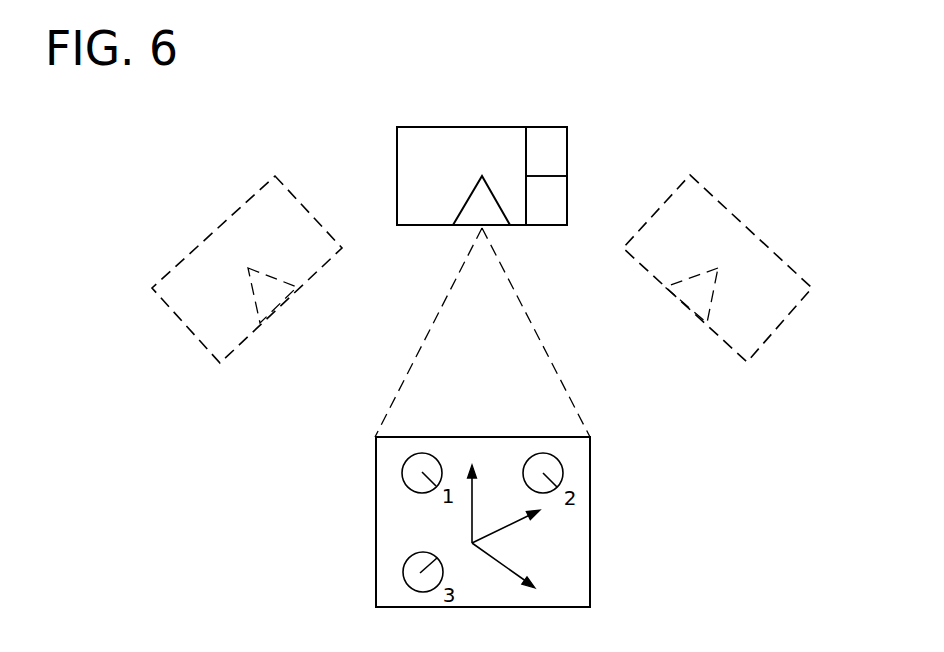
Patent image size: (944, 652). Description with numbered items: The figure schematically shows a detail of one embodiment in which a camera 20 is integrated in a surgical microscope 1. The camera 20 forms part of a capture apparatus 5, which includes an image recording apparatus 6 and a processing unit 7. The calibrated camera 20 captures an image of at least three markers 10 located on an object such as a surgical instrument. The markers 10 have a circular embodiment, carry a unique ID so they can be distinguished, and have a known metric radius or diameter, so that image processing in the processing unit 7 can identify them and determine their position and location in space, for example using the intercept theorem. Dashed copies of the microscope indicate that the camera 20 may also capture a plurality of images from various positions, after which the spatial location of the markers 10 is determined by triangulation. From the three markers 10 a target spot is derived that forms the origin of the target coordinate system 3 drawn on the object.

The surgical microscope 1 is at (378, 131).
The capture apparatus 5 is at (556, 113).
The processing unit 7 is at (548, 154).
The image recording apparatus 6 is at (548, 203).
The camera 20 is at (467, 203).
The marker 10 is at (563, 467).
The target coordinate system 3 is at (522, 558).